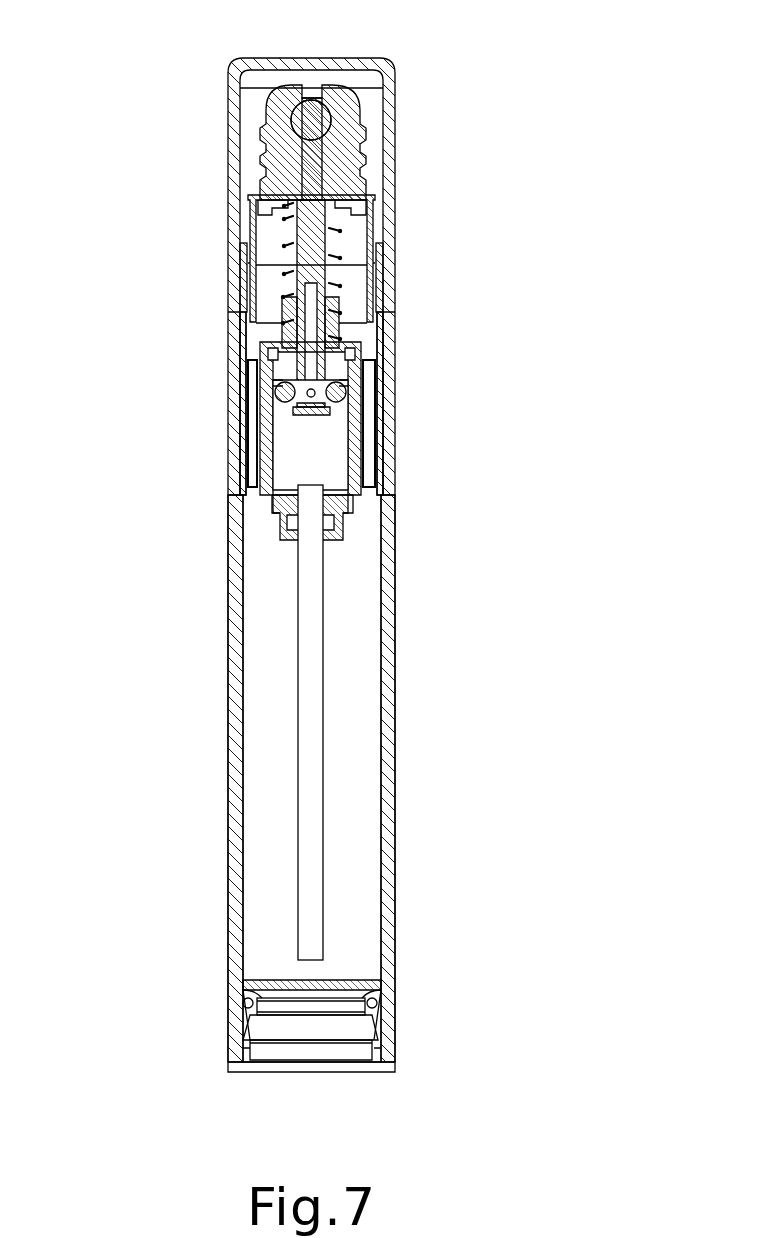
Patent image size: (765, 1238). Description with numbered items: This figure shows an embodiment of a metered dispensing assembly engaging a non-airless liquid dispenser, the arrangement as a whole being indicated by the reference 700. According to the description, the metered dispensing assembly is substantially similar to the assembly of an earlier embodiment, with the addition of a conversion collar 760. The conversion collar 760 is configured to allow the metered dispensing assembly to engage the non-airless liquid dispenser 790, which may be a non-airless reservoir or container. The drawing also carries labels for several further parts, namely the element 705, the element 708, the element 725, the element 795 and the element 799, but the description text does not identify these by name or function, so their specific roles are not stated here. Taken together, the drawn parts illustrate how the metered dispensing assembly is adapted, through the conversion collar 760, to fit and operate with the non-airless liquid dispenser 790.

The dispenser assembly 700 is at (176, 55).
The plug 705 is at (265, 136).
The cap 708 is at (385, 172).
The valve chamber 725 is at (287, 445).
The conversion collar 760 is at (367, 418).
The non-airless liquid dispenser 790 is at (198, 685).
The dip tube 795 is at (303, 793).
The reservoir 799 is at (355, 597).